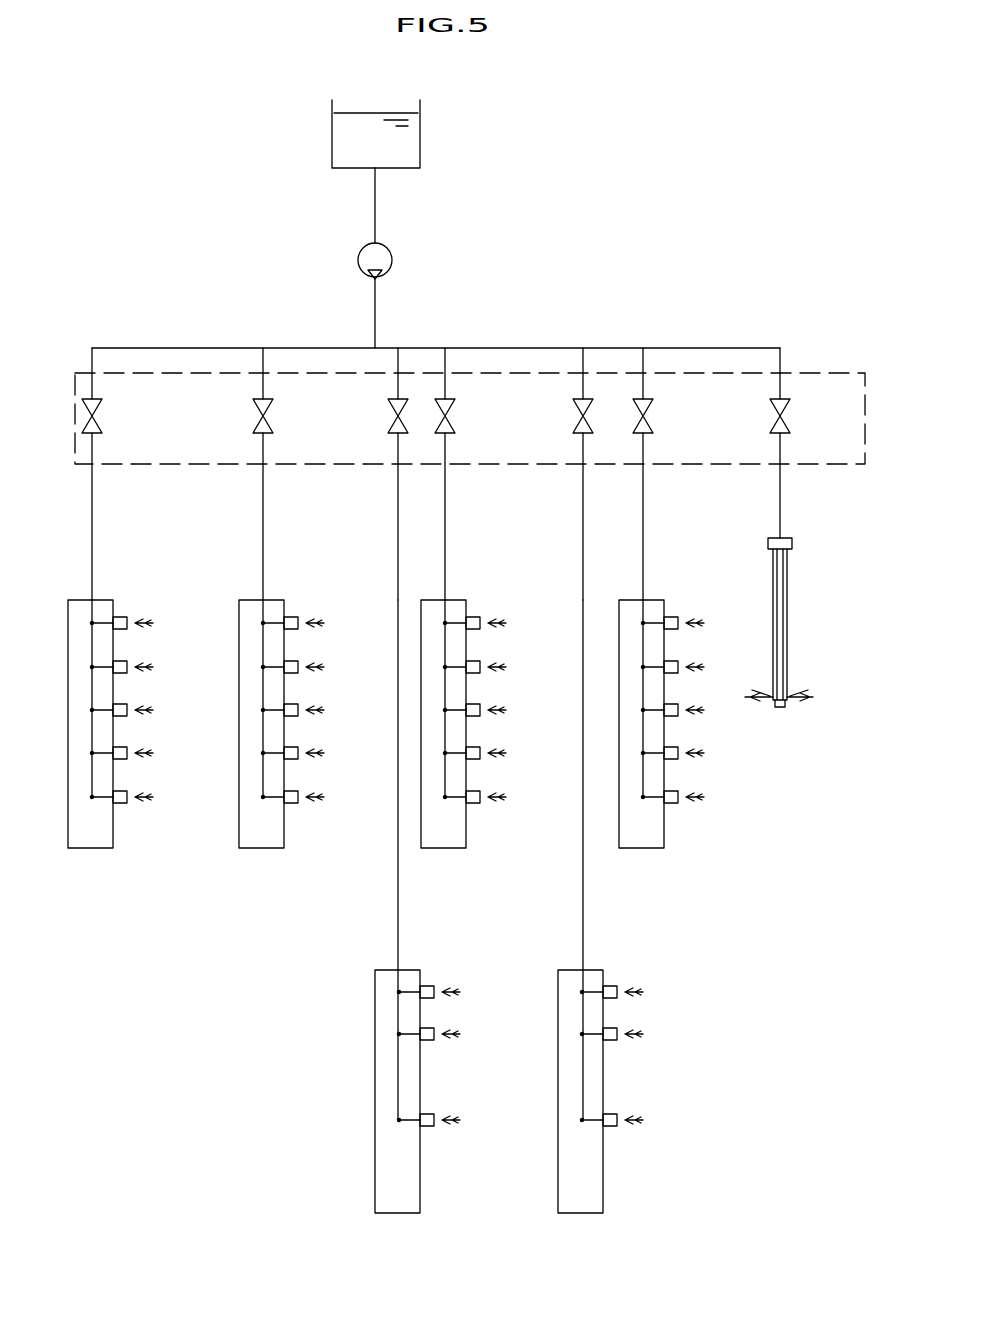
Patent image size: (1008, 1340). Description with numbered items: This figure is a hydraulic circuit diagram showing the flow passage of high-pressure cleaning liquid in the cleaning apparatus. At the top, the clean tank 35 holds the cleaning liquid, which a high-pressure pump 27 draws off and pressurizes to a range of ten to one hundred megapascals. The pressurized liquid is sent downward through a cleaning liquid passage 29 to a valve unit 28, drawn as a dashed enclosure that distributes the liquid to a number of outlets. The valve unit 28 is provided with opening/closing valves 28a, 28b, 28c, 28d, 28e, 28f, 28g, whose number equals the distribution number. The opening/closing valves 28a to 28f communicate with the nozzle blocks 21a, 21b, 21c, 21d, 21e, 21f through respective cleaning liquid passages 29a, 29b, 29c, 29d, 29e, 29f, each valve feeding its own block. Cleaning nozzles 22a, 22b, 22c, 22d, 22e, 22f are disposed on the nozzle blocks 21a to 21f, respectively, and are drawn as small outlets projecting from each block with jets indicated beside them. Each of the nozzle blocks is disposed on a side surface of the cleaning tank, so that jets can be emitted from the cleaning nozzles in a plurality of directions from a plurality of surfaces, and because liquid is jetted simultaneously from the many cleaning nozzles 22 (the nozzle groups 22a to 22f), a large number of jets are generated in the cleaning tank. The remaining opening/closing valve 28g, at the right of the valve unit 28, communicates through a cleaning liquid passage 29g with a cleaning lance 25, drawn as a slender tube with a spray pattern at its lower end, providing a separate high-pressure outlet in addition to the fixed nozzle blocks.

The clean tank 35 is at (420, 143).
The high-pressure pump 27 is at (392, 258).
The cleaning liquid passage 29 is at (375, 313).
The valve unit 28 is at (812, 372).
The opening/closing valve 28a is at (98, 423).
The opening/closing valve 28b is at (269, 423).
The opening/closing valve 28c is at (392, 424).
The opening/closing valve 28d is at (451, 423).
The opening/closing valve 28e is at (577, 424).
The opening/closing valve 28f is at (649, 423).
The opening/closing valve 28g is at (786, 423).
The cleaning liquid passage 29a is at (92, 520).
The cleaning liquid passage 29b is at (263, 520).
The cleaning liquid passage 29c is at (392, 520).
The cleaning liquid passage 29d is at (445, 520).
The cleaning liquid passage 29e is at (577, 520).
The cleaning liquid passage 29f is at (643, 520).
The cleaning liquid passage 29g is at (780, 520).
The nozzle block 21a is at (113, 600).
The nozzle block 21b is at (284, 600).
The nozzle block 21c is at (420, 970).
The nozzle block 21d is at (466, 600).
The nozzle block 21e is at (603, 970).
The nozzle block 21f is at (664, 600).
The cleaning nozzle 22a is at (127, 630).
The cleaning nozzle 22b is at (298, 630).
The cleaning nozzle 22c is at (434, 999).
The cleaning nozzle 22d is at (480, 630).
The cleaning nozzle 22e is at (617, 999).
The cleaning nozzle 22f is at (678, 630).
The cleaning nozzle 22 is at (397, 925).
The cleaning lance 25 is at (787, 602).